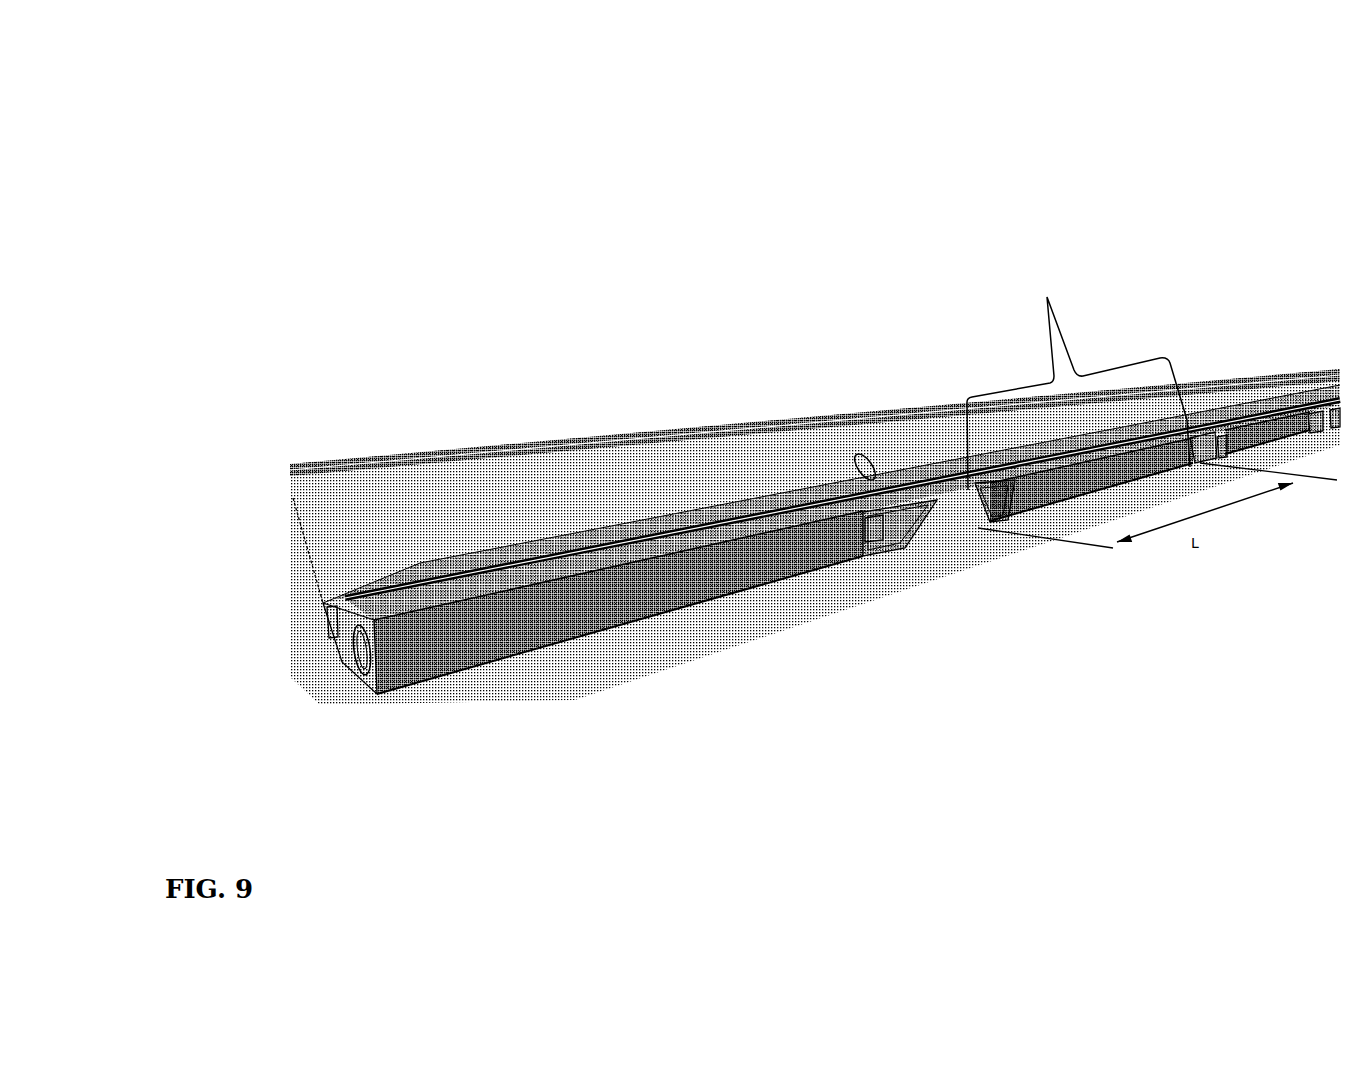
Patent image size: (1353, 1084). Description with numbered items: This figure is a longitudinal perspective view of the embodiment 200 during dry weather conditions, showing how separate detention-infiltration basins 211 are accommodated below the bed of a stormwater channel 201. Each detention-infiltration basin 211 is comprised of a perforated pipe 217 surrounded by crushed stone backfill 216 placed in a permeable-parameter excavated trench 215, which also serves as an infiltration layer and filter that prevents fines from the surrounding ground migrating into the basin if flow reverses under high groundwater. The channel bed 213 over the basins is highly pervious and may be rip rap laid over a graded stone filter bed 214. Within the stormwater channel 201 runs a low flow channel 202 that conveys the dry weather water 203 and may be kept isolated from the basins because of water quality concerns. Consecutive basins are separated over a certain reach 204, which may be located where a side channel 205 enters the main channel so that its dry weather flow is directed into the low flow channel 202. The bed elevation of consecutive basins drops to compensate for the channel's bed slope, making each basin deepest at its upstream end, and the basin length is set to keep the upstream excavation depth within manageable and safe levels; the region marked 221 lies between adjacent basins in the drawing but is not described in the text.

The embodiment 200 is at (284, 130).
The stormwater channel 201 is at (305, 495).
The low flow channel 202 is at (389, 587).
The water 203 is at (342, 605).
The reach 204 is at (898, 480).
The side channel 205 is at (857, 460).
The detention-infiltration basin 211 is at (779, 381).
The channel bed 213 is at (537, 583).
The graded stone filter bed 214 is at (358, 618).
The permeable-parameter excavated trench 215 is at (740, 566).
The crushed stone backfill 216 is at (870, 540).
The perforated pipe 217 is at (887, 523).
The gap 221 is at (940, 537).